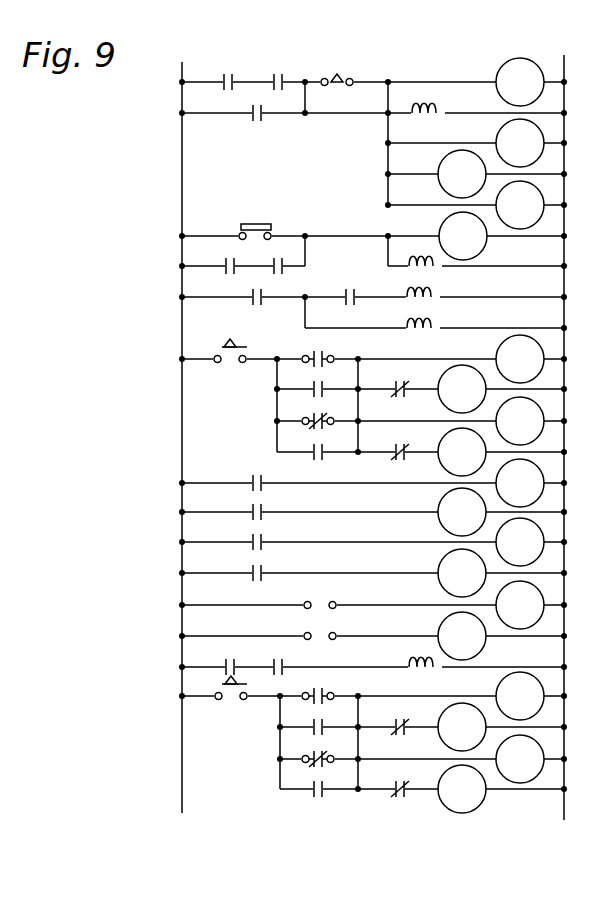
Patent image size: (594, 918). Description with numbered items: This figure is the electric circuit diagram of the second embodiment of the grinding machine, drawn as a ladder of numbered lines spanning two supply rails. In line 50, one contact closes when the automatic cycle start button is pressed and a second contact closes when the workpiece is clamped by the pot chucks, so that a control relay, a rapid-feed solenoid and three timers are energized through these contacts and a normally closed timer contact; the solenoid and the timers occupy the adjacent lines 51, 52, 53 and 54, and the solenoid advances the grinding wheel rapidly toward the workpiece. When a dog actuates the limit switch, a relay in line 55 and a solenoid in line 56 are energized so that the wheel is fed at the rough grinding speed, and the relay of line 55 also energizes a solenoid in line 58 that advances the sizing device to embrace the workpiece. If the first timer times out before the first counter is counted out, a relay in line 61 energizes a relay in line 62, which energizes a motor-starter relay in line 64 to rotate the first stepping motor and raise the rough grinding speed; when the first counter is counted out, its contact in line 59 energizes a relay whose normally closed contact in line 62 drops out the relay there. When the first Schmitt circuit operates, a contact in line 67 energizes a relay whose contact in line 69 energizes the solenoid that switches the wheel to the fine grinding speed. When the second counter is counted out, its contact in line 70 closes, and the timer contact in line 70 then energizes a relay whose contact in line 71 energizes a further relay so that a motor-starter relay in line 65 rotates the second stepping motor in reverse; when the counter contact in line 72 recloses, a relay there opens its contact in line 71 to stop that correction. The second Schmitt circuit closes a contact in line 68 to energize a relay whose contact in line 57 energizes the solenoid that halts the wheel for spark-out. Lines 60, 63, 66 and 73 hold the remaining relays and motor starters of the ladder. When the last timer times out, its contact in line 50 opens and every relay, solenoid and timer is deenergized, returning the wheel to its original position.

The line 50 is at (359, 80).
The control circuit line 51 (SOL1 solenoid line) 51 is at (359, 105).
The control circuit line 52 (TR5 timer line) 52 is at (359, 143).
The control circuit line 53 (TR6 timer line) 53 is at (359, 174).
The control circuit line 54 (TR7 timer line) 54 is at (359, 205).
The line 55 is at (359, 233).
The line 56 is at (359, 258).
The line 57 is at (359, 289).
The line 58 is at (359, 321).
The line 59 is at (359, 354).
The control circuit line 60 (CR31 relay line) 60 is at (359, 388).
The line 61 is at (359, 420).
The line 62 is at (359, 451).
The control circuit line 63 (MS1 motor starter line) 63 is at (359, 482).
The line 64 is at (359, 511).
The line 65 is at (359, 541).
The control circuit line 66 (MS4 motor starter line) 66 is at (359, 572).
The line 67 is at (359, 604).
The line 68 is at (359, 635).
The line 69 is at (359, 659).
The line 70 is at (359, 695).
The line 71 is at (359, 726).
The line 72 is at (359, 758).
The control circuit line 73 (CR39 relay line) 73 is at (359, 788).